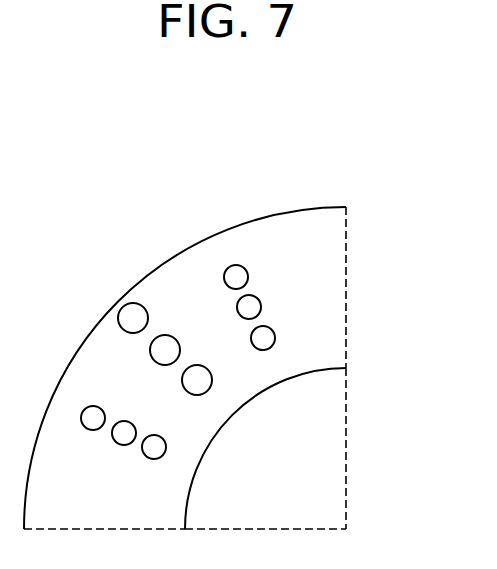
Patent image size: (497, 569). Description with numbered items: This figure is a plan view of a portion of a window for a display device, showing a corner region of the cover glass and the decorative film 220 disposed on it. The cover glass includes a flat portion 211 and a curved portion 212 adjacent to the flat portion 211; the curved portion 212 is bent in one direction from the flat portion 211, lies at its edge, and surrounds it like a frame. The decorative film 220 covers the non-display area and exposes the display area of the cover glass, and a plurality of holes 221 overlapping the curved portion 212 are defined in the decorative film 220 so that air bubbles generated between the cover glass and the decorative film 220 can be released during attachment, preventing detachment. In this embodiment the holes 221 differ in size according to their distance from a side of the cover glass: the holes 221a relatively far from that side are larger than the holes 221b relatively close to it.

The decorative film 220 is at (274, 214).
The holes 221 is at (169, 301).
The holes relatively far from the first or second side 221a is at (130, 282).
The holes relatively close to the first or second side 221b is at (232, 253).
The curved portion 212 is at (332, 301).
The flat portion 211 is at (332, 471).